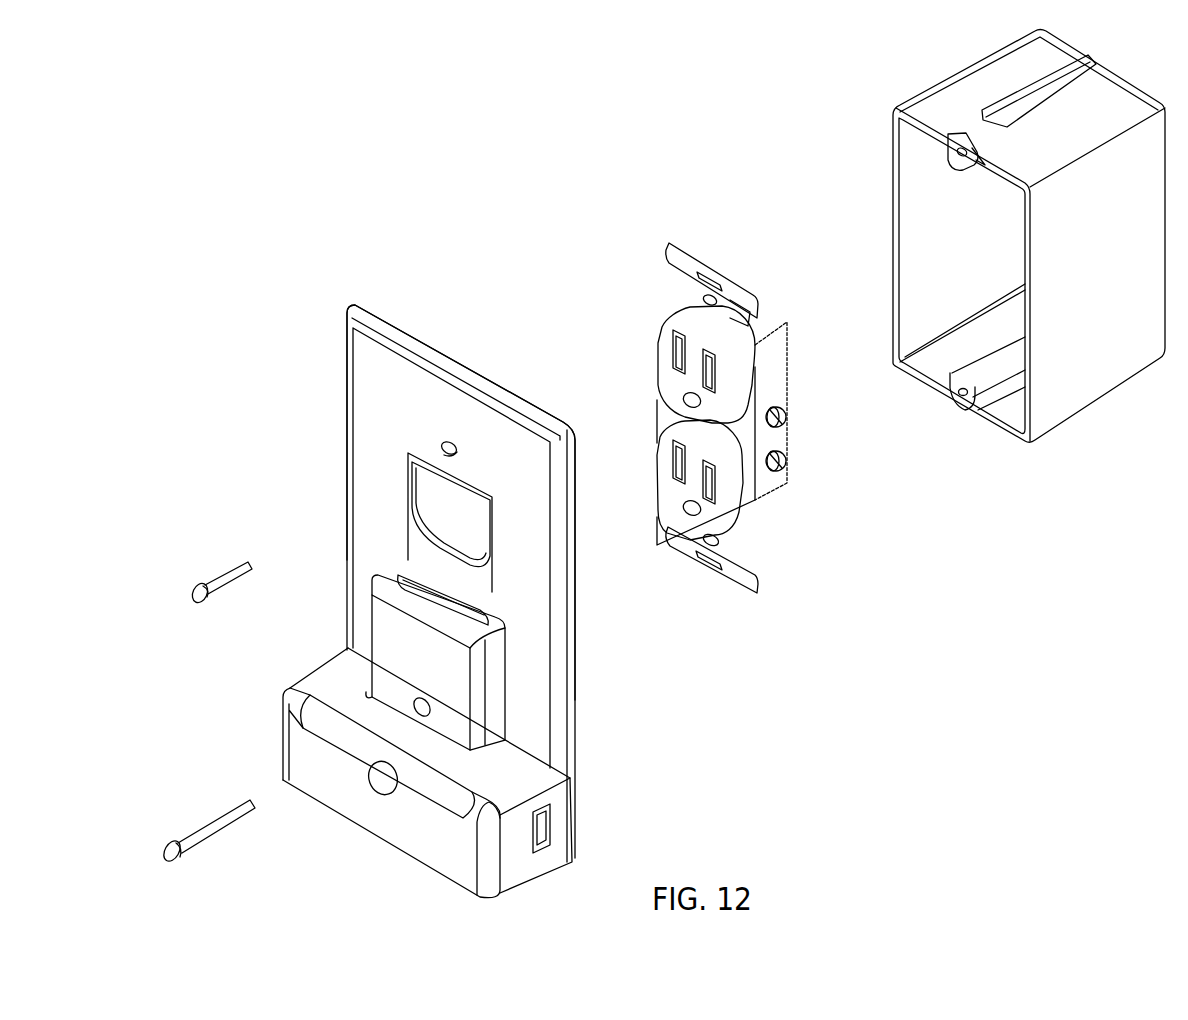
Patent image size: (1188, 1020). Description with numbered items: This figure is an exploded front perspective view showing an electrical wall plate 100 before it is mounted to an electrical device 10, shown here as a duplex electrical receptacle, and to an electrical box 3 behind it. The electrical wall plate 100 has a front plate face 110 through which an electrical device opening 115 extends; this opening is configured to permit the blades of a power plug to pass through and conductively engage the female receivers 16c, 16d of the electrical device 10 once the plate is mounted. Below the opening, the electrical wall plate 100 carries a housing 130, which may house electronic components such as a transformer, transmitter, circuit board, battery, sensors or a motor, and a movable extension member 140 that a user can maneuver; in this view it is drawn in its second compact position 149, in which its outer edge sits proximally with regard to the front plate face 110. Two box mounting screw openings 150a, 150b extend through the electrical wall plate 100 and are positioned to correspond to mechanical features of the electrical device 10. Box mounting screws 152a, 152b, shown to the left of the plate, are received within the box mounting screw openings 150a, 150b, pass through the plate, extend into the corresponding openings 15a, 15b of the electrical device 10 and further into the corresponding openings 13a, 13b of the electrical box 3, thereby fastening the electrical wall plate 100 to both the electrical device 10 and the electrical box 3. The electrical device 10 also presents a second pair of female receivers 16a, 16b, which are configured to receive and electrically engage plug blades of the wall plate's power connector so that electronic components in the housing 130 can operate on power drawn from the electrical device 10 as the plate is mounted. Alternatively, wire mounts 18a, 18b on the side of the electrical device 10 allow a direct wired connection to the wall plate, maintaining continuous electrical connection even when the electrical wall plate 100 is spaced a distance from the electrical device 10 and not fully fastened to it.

The electrical wall plate 100 is at (423, 290).
The front plate face 110 is at (360, 362).
The electrical device opening 115 is at (435, 510).
The housing 130 is at (317, 682).
The movable extension member 140 is at (287, 700).
The second compact position 149 is at (295, 723).
The box mounting screw opening 150a is at (440, 446).
The box mounting screw opening 150b is at (408, 697).
The box mounting screw 152a is at (232, 568).
The box mounting screw 152b is at (200, 822).
The electrical device 10 is at (678, 210).
The opening of electrical device 15a is at (708, 297).
The opening of electrical device 15b is at (718, 543).
The female receiver 16a is at (673, 453).
The female receiver 16b is at (718, 487).
The female receiver 16c is at (673, 353).
The female receiver 16d is at (717, 383).
The wire mount 18a is at (786, 417).
The wire mount 18b is at (786, 465).
The electrical box 3 is at (917, 72).
The opening of electrical box 13a is at (958, 150).
The opening of electrical box 13b is at (963, 397).